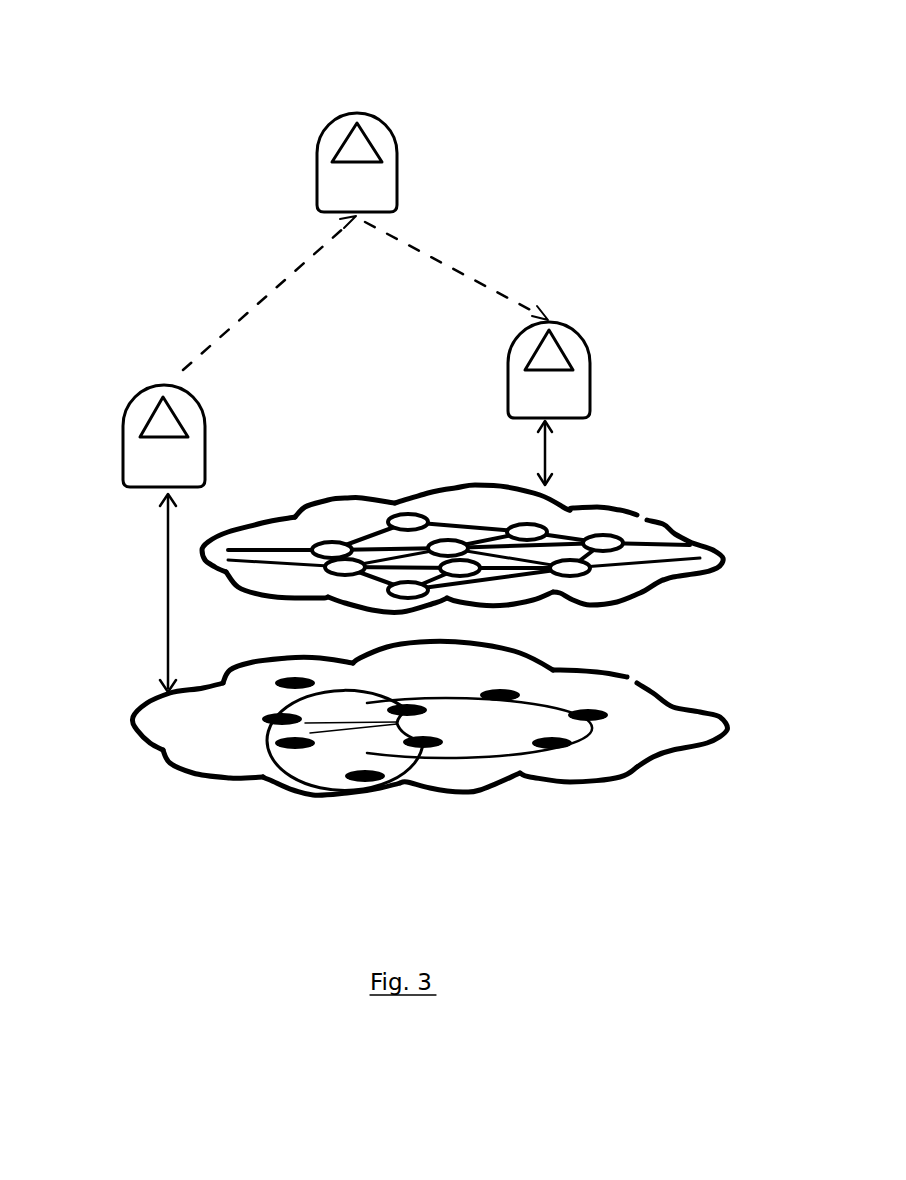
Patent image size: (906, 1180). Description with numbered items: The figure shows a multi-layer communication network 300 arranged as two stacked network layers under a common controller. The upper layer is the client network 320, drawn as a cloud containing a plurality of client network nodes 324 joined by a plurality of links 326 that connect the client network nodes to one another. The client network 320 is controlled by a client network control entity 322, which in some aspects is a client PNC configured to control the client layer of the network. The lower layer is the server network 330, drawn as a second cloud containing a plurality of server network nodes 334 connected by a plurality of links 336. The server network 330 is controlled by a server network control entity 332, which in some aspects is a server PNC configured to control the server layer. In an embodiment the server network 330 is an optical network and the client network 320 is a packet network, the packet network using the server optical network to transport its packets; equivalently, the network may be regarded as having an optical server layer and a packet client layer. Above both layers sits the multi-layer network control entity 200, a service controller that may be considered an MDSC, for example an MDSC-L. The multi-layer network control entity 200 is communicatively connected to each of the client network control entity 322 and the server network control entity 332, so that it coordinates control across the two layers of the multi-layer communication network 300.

The multi-layer communication network 300 is at (178, 78).
The multi-layer network control entity 200 is at (375, 187).
The client network control entity 322 is at (578, 393).
The server network control entity 332 is at (137, 460).
The client network 320 is at (683, 509).
The client network nodes 324 is at (406, 521).
The links 326 is at (445, 518).
The server network 330 is at (711, 687).
The server network nodes 334 is at (362, 775).
The links 336 is at (292, 767).